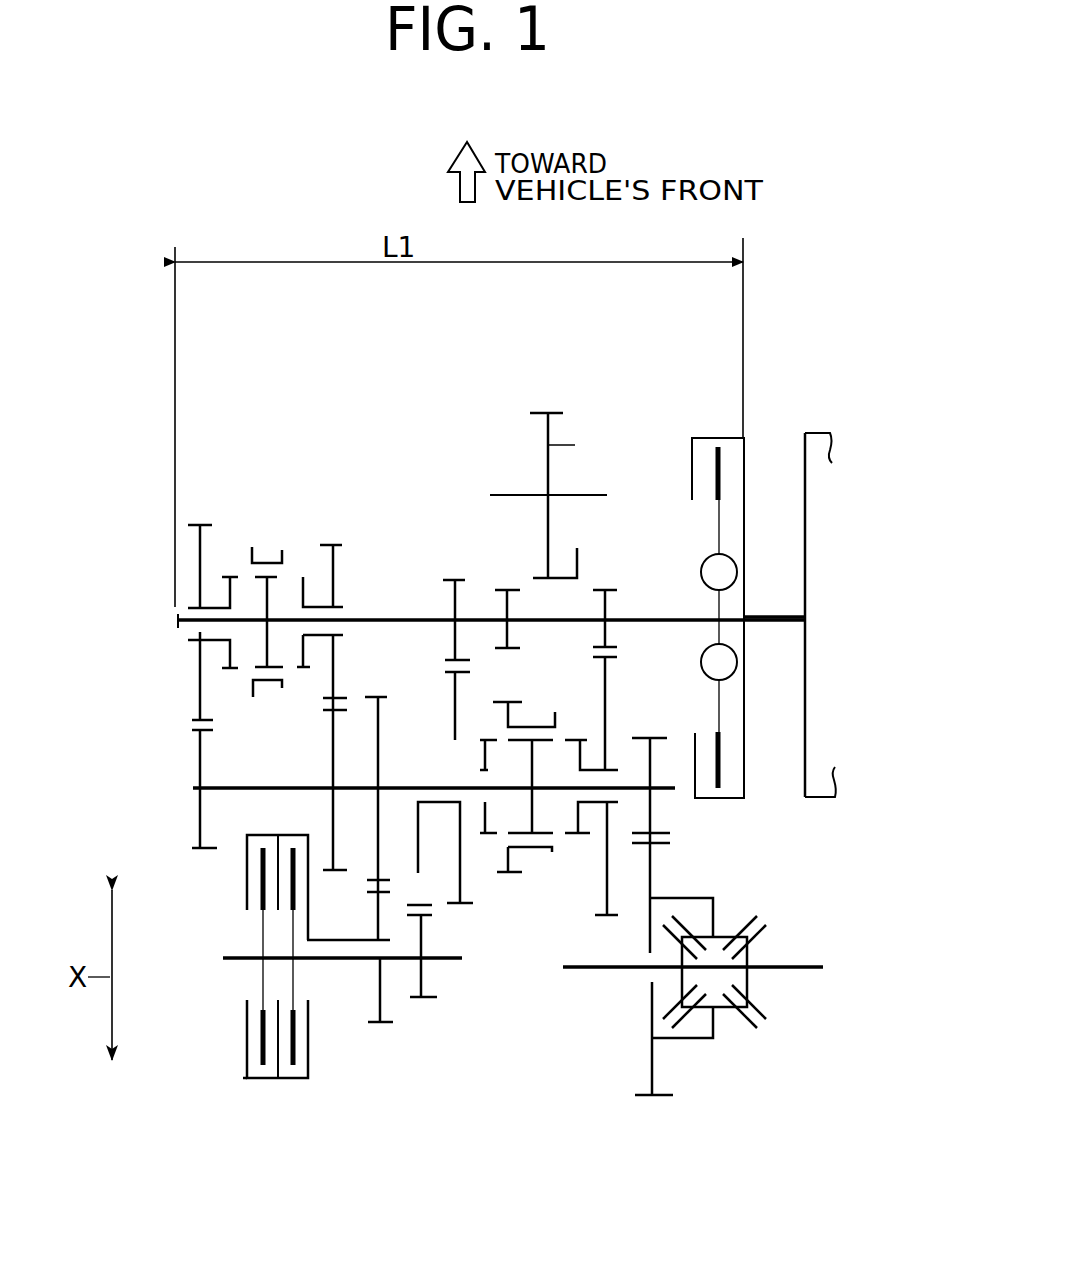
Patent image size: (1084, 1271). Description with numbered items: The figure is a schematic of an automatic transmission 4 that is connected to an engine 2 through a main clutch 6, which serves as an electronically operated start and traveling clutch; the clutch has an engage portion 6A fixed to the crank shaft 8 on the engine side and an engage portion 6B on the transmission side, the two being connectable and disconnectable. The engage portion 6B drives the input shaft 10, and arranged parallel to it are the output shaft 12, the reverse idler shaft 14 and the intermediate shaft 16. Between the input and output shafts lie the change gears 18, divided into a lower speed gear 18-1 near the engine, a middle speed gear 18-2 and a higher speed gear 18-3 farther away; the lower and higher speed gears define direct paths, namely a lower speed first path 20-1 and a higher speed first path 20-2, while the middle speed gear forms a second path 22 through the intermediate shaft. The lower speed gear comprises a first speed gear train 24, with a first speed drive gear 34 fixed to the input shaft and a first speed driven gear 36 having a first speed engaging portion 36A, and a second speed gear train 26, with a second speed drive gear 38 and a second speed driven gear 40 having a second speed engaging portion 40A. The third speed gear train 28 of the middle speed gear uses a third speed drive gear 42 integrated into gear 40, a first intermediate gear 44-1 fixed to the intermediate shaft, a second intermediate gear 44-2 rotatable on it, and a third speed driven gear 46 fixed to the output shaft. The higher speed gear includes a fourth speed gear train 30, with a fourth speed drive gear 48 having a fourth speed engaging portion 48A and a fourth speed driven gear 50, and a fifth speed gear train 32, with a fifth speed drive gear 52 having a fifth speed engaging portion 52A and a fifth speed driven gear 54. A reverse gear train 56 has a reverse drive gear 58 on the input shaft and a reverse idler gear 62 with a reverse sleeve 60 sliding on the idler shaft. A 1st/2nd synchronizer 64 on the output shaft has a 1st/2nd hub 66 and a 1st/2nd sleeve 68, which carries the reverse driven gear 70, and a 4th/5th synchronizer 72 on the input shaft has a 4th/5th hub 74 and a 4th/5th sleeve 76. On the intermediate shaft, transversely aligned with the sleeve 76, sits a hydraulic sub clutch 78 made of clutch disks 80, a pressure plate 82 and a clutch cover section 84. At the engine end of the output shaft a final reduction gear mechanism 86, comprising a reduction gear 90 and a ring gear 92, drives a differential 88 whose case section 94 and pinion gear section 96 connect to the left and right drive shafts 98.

The engine 2 is at (825, 433).
The automatic transmission 4 is at (824, 200).
The main clutch 6 is at (758, 372).
The engage portion 6A is at (744, 403).
The engage portion 6B is at (720, 517).
The crank shaft 8 is at (782, 613).
The input shaft 10 is at (193, 625).
The output shaft 12 is at (193, 795).
The reverse idler shaft 14 is at (590, 495).
The intermediate shaft 16 is at (240, 960).
The change gears 18 is at (412, 490).
The lower speed gear 18-1 is at (624, 515).
The middle speed gear 18-2 is at (448, 1108).
The higher speed gear 18-3 is at (258, 462).
The lower speed first path 20-1 is at (479, 505).
The higher speed first path 20-2 is at (300, 462).
The second path 22 is at (463, 1078).
The first speed gear train 24 is at (648, 530).
The second speed gear train 26 is at (487, 558).
The third speed gear train 28 is at (420, 1060).
The fourth speed gear train 30 is at (360, 490).
The fifth speed gear train 32 is at (205, 485).
The first speed drive gear 34 is at (606, 604).
The first speed driven gear 36 is at (607, 676).
The first speed engaging portion 36A is at (578, 752).
The second speed drive gear 38 is at (452, 600).
The second speed driven gear 40 is at (428, 880).
The second speed engaging portion 40A is at (520, 870).
The third speed drive gear 42 is at (448, 975).
The first intermediate gear 44-1 is at (400, 1020).
The second intermediate gear 44-2 is at (358, 1000).
The third speed driven gear 46 is at (370, 745).
The fourth speed drive gear 48 is at (335, 578).
The fourth speed engaging portion 48A is at (268, 577).
The fourth speed driven gear 50 is at (352, 744).
The fifth speed drive gear 52 is at (200, 553).
The fifth speed engaging portion 52A is at (233, 683).
The fifth speed driven gear 54 is at (200, 747).
The reverse gear train 56 is at (543, 397).
The reverse drive gear 58 is at (510, 628).
The reverse sleeve 60 is at (575, 575).
The reverse idler gear 62 is at (553, 444).
The 1st/2nd synchronizer 64 is at (537, 862).
The 1st/2nd hub 66 is at (520, 855).
The 1st/2nd sleeve 68 is at (553, 847).
The reverse driven gear 70 is at (538, 915).
The 4th/5th synchronizer 72 is at (262, 712).
The 4th/5th hub 74 is at (263, 580).
The 4th/5th sleeve 76 is at (253, 688).
The sub clutch 78 is at (284, 1090).
The clutch disks 80 is at (240, 990).
The pressure plate 82 is at (247, 880).
The clutch cover section 84 is at (260, 1080).
The final reduction gear mechanism 86 is at (710, 862).
The differential 88 is at (763, 1048).
The reduction gear 90 is at (653, 813).
The ring gear 92 is at (655, 1068).
The case section 94 is at (690, 895).
The pinion gear section 96 is at (747, 982).
The drive shafts 98 is at (615, 970).